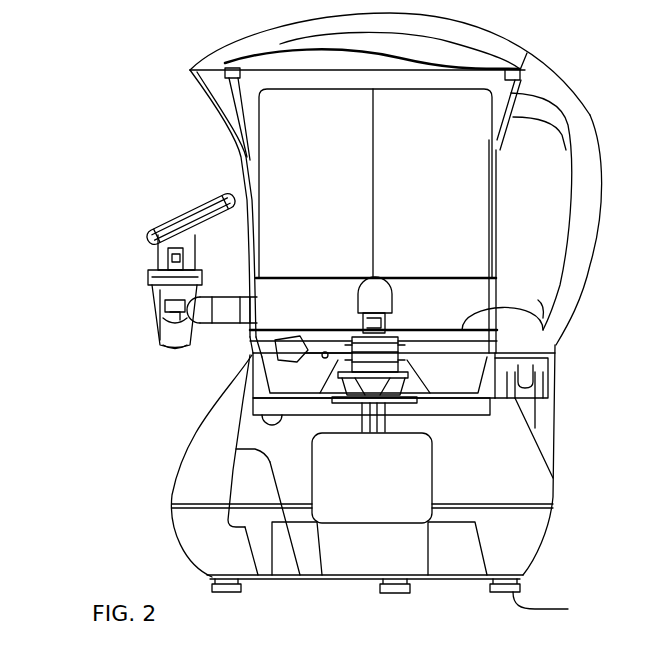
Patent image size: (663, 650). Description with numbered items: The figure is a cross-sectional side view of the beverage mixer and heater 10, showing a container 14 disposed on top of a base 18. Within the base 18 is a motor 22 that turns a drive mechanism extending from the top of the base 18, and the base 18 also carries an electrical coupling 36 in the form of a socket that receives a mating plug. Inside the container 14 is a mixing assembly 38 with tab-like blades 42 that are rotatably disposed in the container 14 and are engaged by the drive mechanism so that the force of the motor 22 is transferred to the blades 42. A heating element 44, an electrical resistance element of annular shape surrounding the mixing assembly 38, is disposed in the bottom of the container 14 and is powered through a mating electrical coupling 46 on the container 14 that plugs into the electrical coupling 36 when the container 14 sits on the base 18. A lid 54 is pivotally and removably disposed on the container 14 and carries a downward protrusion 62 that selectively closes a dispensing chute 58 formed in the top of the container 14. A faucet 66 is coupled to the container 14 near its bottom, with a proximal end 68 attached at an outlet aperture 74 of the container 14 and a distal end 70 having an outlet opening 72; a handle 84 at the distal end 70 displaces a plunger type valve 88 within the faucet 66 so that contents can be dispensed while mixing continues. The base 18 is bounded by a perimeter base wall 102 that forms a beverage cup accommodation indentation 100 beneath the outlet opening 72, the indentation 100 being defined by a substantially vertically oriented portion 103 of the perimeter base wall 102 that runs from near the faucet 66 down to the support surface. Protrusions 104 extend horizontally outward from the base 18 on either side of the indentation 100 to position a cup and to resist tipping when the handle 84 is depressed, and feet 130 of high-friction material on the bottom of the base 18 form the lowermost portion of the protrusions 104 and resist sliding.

The beverage mixer and heater 10 is at (130, 462).
The container 14 is at (433, 147).
The base 18 is at (502, 486).
The motor 22 is at (386, 486).
The electrical coupling 36 is at (545, 387).
The mixing assembly 38 is at (413, 280).
The blades 42 is at (400, 302).
The heating element 44 is at (462, 316).
The electrical coupling 46 is at (525, 372).
The lid 54 is at (456, 22).
The dispensing chute 58 is at (215, 92).
The downward protrusion 62 is at (245, 116).
The faucet 66 is at (122, 264).
The proximal end 68 is at (245, 326).
The distal end 70 is at (152, 325).
The outlet opening 72 is at (175, 350).
The outlet aperture 74 is at (288, 278).
The handle 84 is at (197, 194).
The plunger type valve 88 is at (157, 298).
The beverage cup accommodation indentation 100 is at (232, 467).
The perimeter base wall 102 is at (258, 575).
The vertically oriented portion 103 is at (300, 575).
The protrusion 104 is at (170, 489).
The feet 130 is at (24, 4).